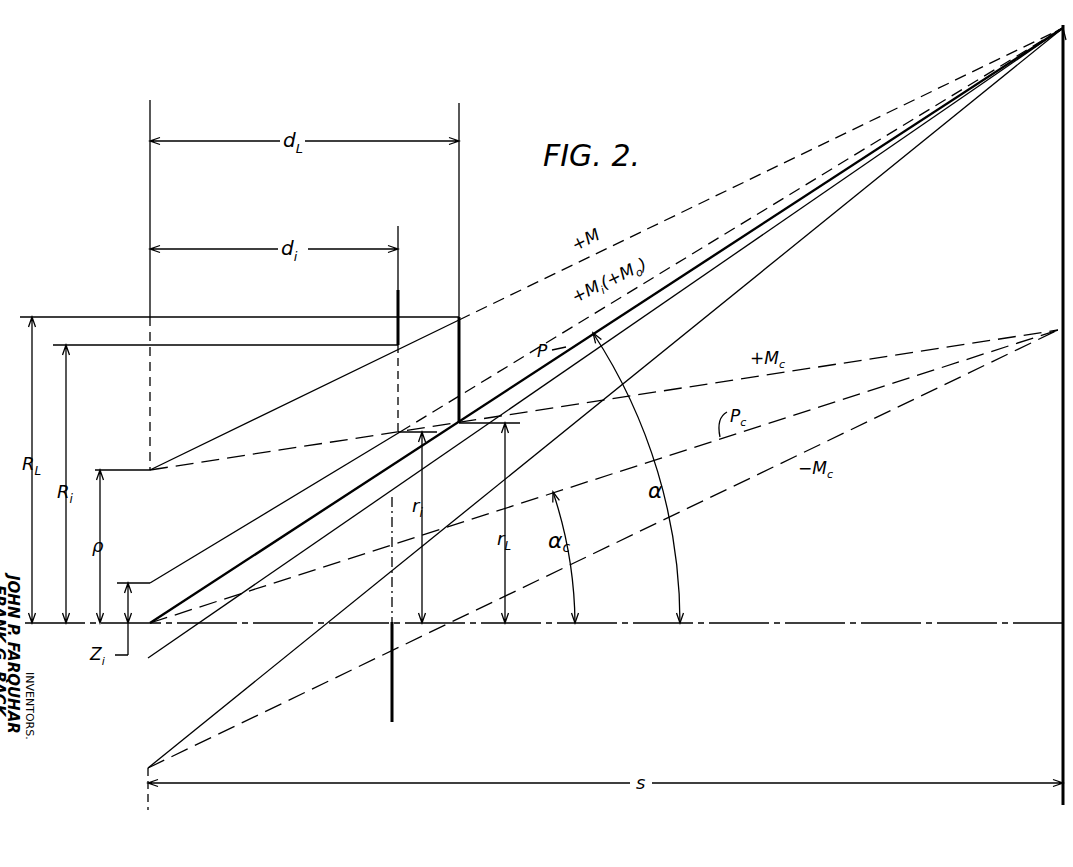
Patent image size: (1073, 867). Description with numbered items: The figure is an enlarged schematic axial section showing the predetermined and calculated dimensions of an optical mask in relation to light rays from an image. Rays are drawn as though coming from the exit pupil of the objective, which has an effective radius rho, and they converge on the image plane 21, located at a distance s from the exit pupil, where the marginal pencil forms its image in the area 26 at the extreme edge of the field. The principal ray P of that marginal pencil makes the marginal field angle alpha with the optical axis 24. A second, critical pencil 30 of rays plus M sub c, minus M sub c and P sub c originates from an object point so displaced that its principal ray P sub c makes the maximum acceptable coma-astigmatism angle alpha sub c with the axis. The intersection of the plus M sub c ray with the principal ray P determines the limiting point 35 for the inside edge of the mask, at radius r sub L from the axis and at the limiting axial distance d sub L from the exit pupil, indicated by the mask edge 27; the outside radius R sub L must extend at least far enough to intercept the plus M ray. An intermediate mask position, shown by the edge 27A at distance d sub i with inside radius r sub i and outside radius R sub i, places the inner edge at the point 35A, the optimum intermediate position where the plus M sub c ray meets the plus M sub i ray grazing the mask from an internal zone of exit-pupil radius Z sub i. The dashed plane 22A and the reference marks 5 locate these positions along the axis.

The section plane 5 is at (380, 706).
The image plane 21 is at (1062, 215).
The object plane 22A is at (153, 400).
The optical axis 24 is at (760, 624).
The image area 26 is at (1062, 30).
The lens aperture 27 is at (460, 366).
The intermediate aperture 27A is at (397, 408).
The critical pencil 30 is at (742, 490).
The limiting point 35 is at (459, 428).
The optimum intermediate position 35A is at (398, 434).